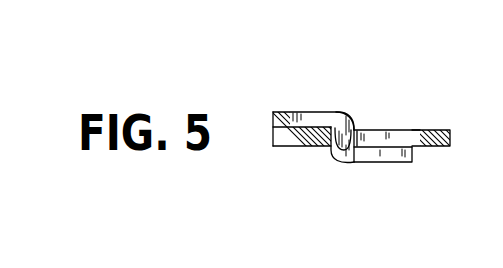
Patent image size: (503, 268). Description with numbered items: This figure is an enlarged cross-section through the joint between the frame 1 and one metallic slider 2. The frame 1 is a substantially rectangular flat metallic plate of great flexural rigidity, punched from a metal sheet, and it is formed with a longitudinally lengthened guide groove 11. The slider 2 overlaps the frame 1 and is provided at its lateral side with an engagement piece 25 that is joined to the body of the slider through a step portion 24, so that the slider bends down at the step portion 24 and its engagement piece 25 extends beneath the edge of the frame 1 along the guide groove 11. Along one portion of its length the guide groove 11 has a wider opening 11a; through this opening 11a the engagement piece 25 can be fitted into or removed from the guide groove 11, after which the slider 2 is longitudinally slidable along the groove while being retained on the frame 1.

The frame 1 is at (443, 128).
The slider 2 is at (277, 109).
The guide groove 11 is at (338, 163).
The wider opening 11a is at (408, 130).
The step portion 24 is at (350, 120).
The engagement piece 25 is at (385, 163).